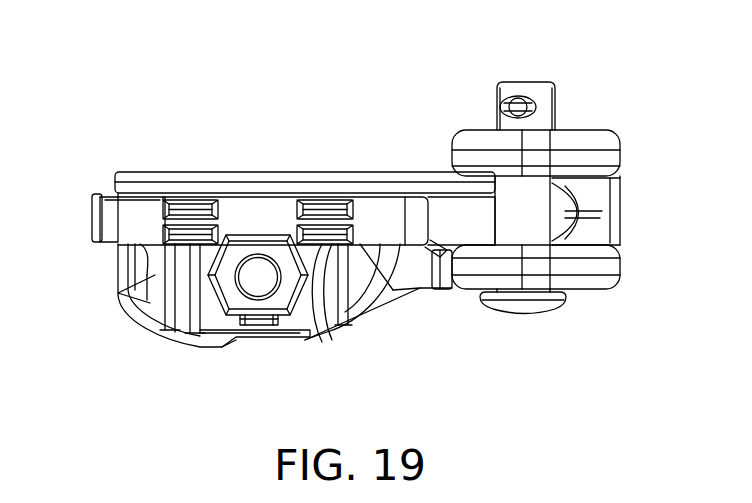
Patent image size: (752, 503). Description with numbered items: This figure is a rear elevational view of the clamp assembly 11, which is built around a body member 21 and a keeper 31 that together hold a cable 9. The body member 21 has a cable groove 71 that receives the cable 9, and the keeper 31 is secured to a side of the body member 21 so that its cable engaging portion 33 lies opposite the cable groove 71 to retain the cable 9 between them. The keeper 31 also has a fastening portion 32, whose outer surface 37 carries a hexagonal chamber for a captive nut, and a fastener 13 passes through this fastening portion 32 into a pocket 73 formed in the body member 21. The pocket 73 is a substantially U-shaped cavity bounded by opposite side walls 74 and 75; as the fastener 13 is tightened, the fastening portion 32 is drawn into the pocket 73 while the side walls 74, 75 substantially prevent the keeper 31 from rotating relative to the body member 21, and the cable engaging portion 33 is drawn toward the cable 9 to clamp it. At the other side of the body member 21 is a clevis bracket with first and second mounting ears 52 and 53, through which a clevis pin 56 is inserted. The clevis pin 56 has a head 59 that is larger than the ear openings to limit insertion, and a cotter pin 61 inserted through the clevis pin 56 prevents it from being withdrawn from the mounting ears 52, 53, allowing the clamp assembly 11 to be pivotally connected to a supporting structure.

The clamp assembly 11 is at (279, 127).
The cable groove 71 is at (112, 188).
The cable 9 is at (92, 213).
The cable engaging portion 33 is at (129, 198).
The fastener 13 is at (258, 260).
The side wall 75 is at (118, 291).
The pocket 73 is at (192, 330).
The keeper 31 is at (229, 334).
The fastening portion 32 is at (283, 336).
The outer surface 37 is at (300, 314).
The side wall 74 is at (347, 312).
The body member 21 is at (418, 289).
The clevis pin 56 is at (556, 112).
The cotter pin 61 is at (517, 95).
The second mounting ear 53 is at (622, 138).
The first mounting ear 52 is at (604, 290).
The head 59 is at (556, 311).